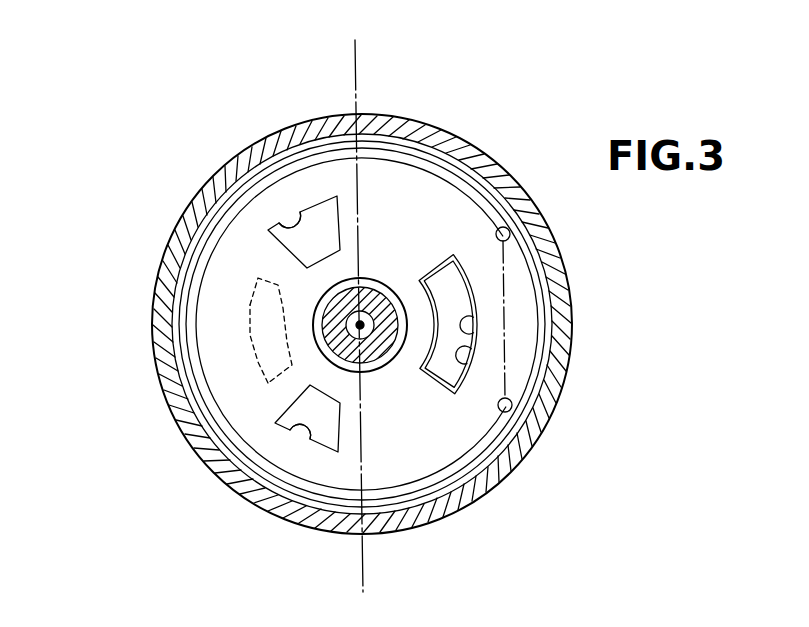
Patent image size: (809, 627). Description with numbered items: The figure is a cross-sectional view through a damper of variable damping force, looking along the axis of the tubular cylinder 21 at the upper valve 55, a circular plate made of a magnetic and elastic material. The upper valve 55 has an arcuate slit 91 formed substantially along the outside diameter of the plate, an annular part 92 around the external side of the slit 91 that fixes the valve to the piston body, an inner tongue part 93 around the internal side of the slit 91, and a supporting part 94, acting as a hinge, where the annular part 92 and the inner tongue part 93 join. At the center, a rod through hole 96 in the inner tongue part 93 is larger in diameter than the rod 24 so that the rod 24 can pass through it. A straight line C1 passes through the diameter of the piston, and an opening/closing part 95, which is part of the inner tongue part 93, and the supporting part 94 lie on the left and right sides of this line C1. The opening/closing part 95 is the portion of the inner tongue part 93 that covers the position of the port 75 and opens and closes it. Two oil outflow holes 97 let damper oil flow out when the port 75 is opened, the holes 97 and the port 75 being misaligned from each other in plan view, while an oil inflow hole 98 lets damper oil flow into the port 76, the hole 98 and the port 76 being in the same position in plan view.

The straight line C1 is at (352, 88).
The cylinder 21 is at (492, 153).
The upper valve 55 is at (182, 248).
The arcuate slit 91 is at (440, 133).
The annular part 92 is at (368, 138).
The rod through hole 96 is at (362, 283).
The rod 24 is at (370, 364).
The inner tongue part 93 is at (310, 184).
The oil outflow holes 97 is at (283, 221).
The opening/closing part 95 is at (265, 315).
The port 75 is at (253, 353).
The port 76 is at (474, 320).
The oil inflow hole 98 is at (471, 352).
The supporting part 94 is at (507, 293).